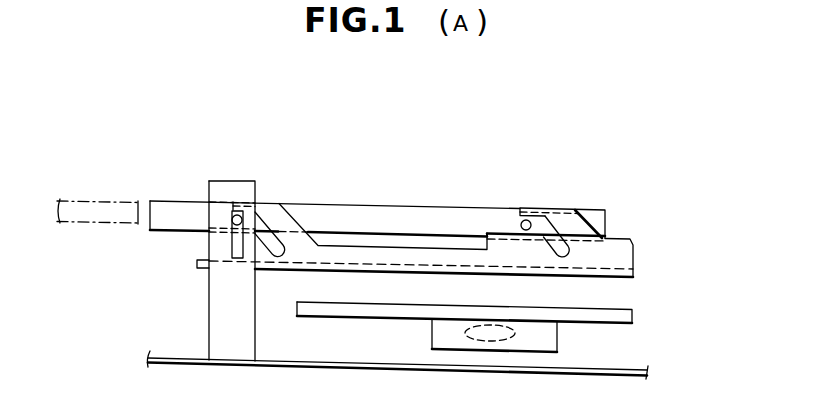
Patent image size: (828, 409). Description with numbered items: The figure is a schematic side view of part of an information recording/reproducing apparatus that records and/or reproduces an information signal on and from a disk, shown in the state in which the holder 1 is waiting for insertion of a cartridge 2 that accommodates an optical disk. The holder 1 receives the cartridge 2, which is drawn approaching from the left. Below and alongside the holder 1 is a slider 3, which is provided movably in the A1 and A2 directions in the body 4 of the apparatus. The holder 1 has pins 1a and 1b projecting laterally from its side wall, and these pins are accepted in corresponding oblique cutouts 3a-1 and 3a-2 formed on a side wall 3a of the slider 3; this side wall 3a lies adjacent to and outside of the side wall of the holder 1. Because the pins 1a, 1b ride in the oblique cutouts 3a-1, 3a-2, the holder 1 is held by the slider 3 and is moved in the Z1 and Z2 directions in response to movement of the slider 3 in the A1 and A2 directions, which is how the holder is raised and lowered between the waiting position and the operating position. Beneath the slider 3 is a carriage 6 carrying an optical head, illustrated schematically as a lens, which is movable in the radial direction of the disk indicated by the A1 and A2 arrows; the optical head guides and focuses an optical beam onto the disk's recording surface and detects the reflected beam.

The holder 1 is at (438, 220).
The pin 1a is at (233, 207).
The pin 1b is at (524, 220).
The cartridge 2 is at (107, 215).
The slider 3 is at (440, 250).
The side wall 3a is at (326, 252).
The oblique cutout 3a-1 is at (274, 258).
The oblique cutout 3a-2 is at (561, 243).
The body 4 is at (586, 375).
The carriage 6 is at (557, 339).
The Z1 direction Z1 is at (383, 232).
The Z2 direction Z2 is at (383, 260).
The A1 direction A1 is at (723, 267).
The A2 direction A2 is at (653, 267).